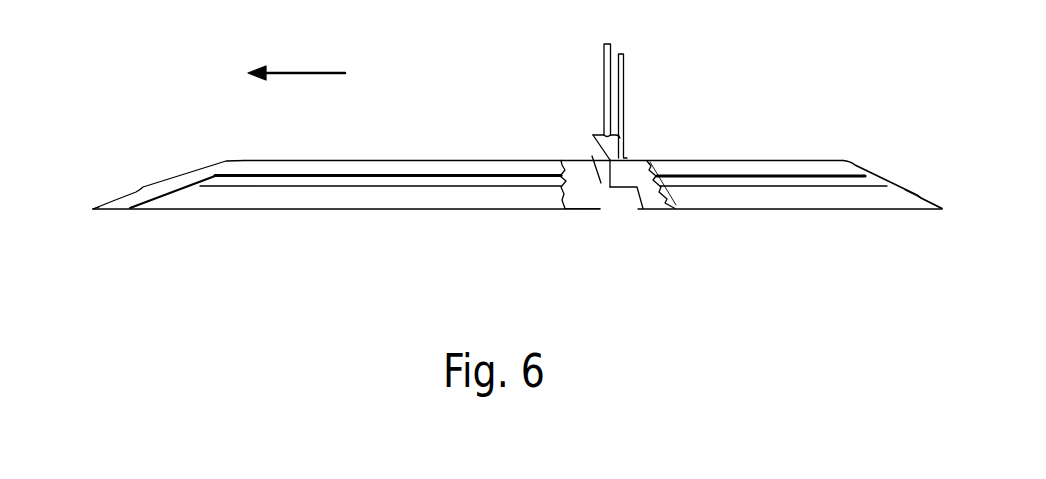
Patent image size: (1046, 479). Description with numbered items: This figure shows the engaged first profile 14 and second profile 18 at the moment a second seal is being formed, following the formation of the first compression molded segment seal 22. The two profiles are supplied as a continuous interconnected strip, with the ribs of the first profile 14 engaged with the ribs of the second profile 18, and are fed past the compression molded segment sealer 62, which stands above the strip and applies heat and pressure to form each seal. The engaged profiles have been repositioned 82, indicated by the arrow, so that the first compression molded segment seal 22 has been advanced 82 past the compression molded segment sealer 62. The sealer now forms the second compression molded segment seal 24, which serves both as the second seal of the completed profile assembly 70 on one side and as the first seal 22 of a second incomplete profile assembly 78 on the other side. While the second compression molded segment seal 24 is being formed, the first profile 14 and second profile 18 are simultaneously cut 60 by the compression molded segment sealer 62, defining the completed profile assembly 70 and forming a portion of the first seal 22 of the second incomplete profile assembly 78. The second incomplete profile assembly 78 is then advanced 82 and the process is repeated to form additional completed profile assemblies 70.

The first profile 14 is at (280, 160).
The second profile 18 is at (353, 202).
The compression molded segment seal 22 is at (124, 201).
The second compression molded segment seal 24 is at (586, 205).
The cut 60 is at (628, 198).
The compression molded segment sealer 62 is at (625, 170).
The completed profile assembly 70 is at (443, 125).
The second incomplete profile assembly 78 is at (743, 140).
The repositioning/advancing direction 82 is at (338, 55).